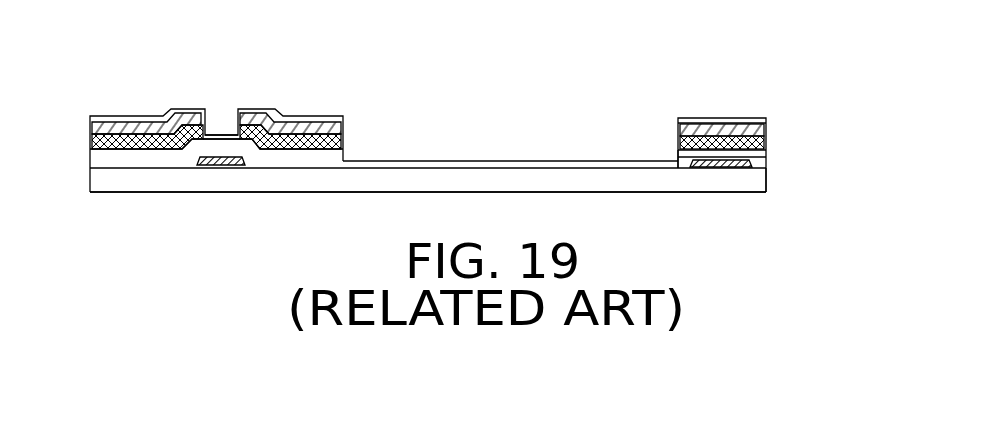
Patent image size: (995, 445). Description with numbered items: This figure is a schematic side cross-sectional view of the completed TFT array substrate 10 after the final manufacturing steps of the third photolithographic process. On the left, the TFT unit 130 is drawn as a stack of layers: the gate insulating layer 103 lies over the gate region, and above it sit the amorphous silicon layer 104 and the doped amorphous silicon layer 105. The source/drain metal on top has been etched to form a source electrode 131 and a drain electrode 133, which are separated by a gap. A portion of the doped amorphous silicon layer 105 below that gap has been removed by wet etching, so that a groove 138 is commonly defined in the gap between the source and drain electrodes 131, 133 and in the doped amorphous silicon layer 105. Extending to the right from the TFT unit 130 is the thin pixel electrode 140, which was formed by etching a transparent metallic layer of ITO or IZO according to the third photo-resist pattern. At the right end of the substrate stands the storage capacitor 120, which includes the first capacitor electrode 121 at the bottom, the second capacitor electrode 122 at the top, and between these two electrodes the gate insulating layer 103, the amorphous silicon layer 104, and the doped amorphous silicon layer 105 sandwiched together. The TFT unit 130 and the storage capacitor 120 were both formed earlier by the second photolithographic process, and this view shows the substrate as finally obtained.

The TFT array substrate 10 is at (472, 38).
The gate insulating layer 103 is at (157, 158).
The amorphous silicon layer 104 is at (766, 149).
The doped amorphous silicon layer 105 is at (98, 124).
The storage capacitor 120 is at (845, 97).
The first capacitor electrode 121 is at (738, 166).
The second capacitor electrode 122 is at (763, 125).
The TFT unit 130 is at (297, 100).
The source electrode 131 is at (148, 124).
The drain electrode 133 is at (338, 128).
The groove 138 is at (223, 122).
The pixel electrode 140 is at (485, 160).